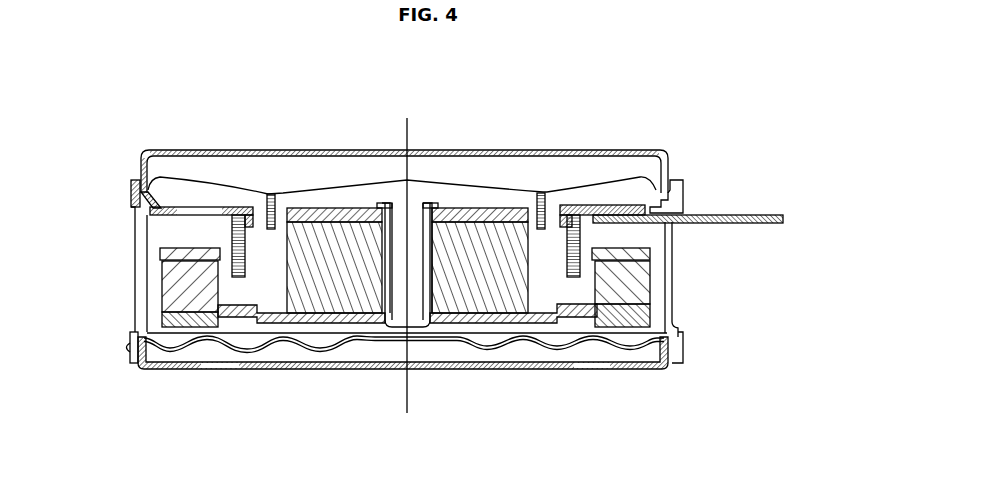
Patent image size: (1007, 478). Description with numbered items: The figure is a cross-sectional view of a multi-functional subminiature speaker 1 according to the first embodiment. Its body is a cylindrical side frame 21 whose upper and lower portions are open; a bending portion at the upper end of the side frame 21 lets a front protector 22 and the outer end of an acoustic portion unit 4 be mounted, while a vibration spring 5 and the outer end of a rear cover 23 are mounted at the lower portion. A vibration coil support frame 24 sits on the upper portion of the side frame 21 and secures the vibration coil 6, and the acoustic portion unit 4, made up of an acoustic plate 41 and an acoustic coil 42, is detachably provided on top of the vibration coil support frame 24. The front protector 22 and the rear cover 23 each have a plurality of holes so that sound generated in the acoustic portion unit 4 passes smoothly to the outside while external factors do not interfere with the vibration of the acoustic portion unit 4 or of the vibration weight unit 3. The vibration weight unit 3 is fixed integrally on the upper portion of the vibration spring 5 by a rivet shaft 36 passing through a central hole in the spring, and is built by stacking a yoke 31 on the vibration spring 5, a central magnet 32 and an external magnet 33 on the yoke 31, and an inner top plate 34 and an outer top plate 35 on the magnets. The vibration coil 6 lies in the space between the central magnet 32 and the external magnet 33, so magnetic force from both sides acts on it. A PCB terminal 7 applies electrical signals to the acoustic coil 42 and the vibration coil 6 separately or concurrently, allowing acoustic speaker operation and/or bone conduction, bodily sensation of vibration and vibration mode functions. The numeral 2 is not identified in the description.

The multi-functional subminiature speaker 1 is at (178, 167).
The frame 2 is at (354, 258).
The vibration weight unit 3 is at (399, 197).
The acoustic portion unit 4 is at (260, 186).
The vibration spring 5 is at (307, 348).
The vibration coil 6 is at (245, 279).
The PCB terminal 7 is at (743, 214).
The side frame 21 is at (132, 343).
The front protector 22 is at (238, 156).
The rear cover 23 is at (357, 370).
The vibration coil support frame 24 is at (680, 187).
The yoke 31 is at (550, 327).
The central magnet 32 is at (457, 324).
The external magnet 33 is at (627, 300).
The inner top plate 34 is at (480, 220).
The outer top plate 35 is at (173, 255).
The rivet shaft 36 is at (431, 221).
The acoustic plate 41 is at (285, 192).
The acoustic coil 42 is at (545, 191).